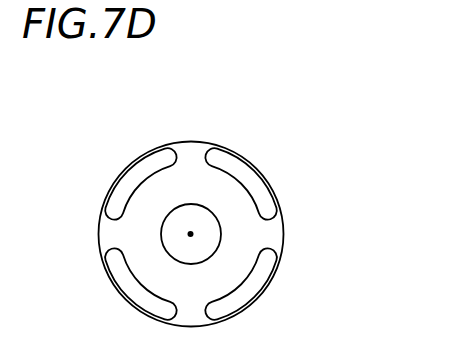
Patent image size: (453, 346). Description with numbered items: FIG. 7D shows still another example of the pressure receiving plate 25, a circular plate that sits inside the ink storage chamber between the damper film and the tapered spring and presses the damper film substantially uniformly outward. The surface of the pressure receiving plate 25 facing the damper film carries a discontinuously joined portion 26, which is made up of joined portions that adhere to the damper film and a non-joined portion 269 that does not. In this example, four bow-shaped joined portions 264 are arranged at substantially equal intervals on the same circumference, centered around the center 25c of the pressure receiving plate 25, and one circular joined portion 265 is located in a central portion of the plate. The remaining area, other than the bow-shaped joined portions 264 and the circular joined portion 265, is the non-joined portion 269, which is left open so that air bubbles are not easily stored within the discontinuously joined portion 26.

The pressure receiving plate 25 is at (254, 134).
The center of the pressure receiving plate 25c is at (189, 234).
The discontinuously joined portion 26 is at (372, 195).
The bow-shaped joined portions 264 is at (267, 193).
The non-joined portion 269 is at (263, 227).
The circular joined portion 265 is at (210, 235).